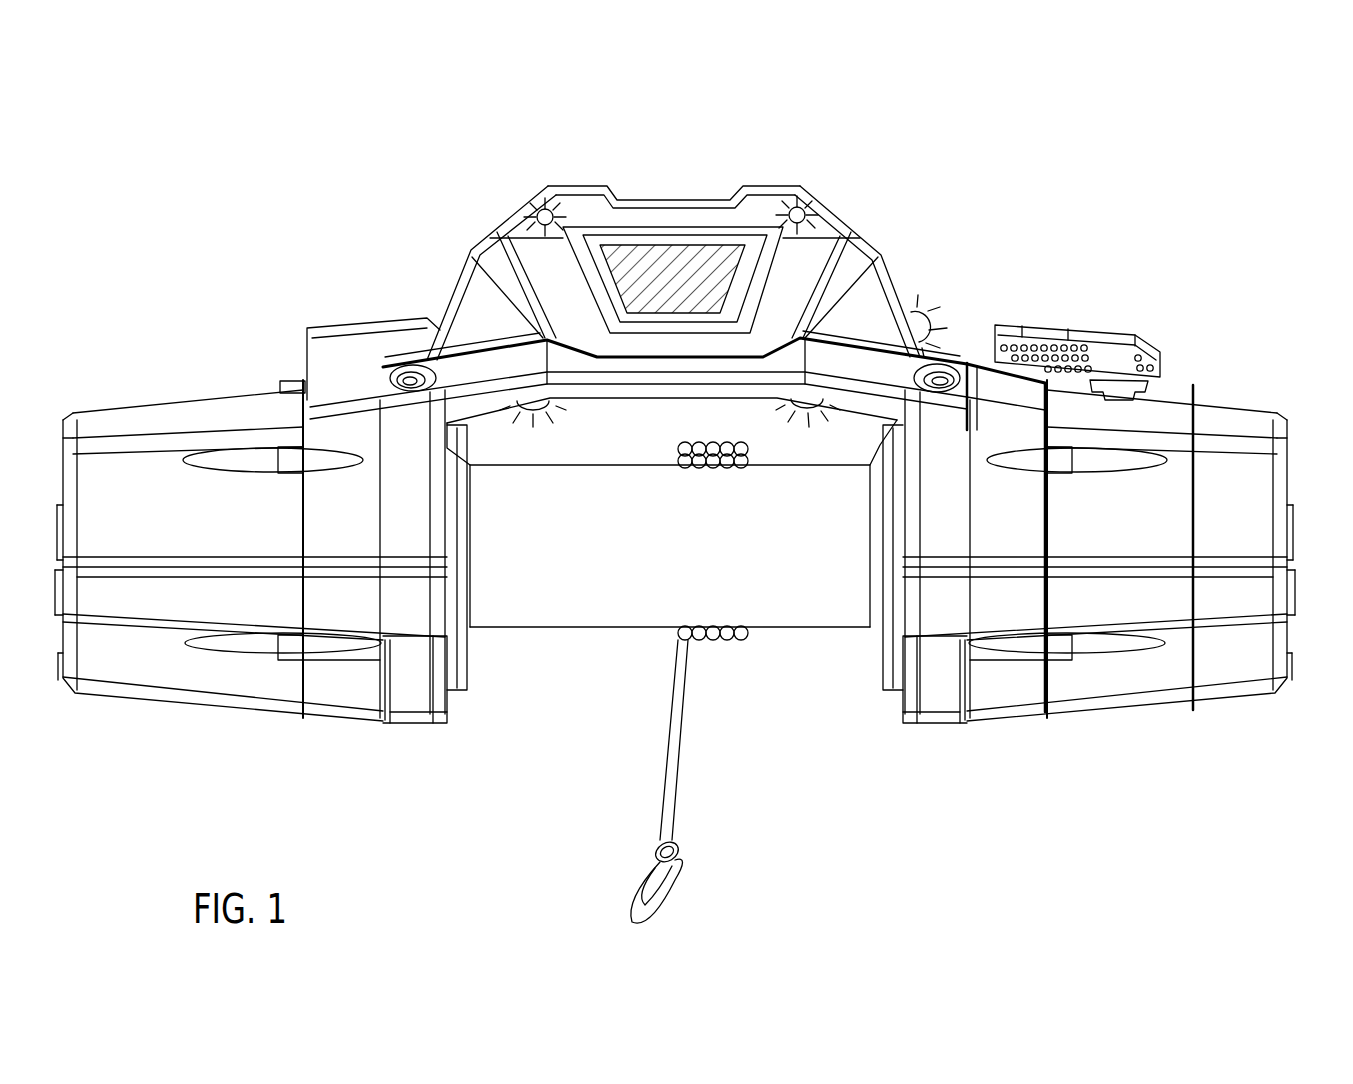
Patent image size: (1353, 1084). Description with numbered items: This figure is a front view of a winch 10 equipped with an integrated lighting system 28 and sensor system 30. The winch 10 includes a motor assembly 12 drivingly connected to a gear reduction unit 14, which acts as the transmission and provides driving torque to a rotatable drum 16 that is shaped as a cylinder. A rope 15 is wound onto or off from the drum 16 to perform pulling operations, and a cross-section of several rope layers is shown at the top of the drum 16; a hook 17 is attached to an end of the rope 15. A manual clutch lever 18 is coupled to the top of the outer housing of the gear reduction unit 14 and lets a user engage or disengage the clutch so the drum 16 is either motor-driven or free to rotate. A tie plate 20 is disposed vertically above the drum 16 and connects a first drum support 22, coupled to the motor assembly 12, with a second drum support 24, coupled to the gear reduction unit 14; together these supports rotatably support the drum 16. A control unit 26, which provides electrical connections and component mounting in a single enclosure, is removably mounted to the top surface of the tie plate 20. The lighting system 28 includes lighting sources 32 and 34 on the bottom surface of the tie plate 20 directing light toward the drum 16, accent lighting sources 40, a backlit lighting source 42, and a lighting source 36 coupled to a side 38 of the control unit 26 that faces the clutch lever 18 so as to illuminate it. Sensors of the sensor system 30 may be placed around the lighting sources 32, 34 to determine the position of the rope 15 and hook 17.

The winch 10 is at (1265, 138).
The motor assembly 12 is at (180, 366).
The gear reduction unit 14 is at (1205, 343).
The rope 15 is at (742, 642).
The rotatable drum 16 is at (785, 640).
The hook 17 is at (660, 917).
The manual clutch lever 18 is at (1025, 324).
The tie plate 20 is at (413, 362).
The first drum support 22 is at (420, 692).
The second drum support 24 is at (930, 688).
The control unit 26 is at (843, 183).
The lighting system 28 is at (955, 286).
The sensor system 30 is at (658, 390).
The lighting source 32 is at (562, 443).
The lighting source 34 is at (800, 430).
The lighting source 36 is at (955, 322).
The side 38 is at (893, 283).
The lighting sources 40 is at (797, 213).
The lighting source 42 is at (643, 260).